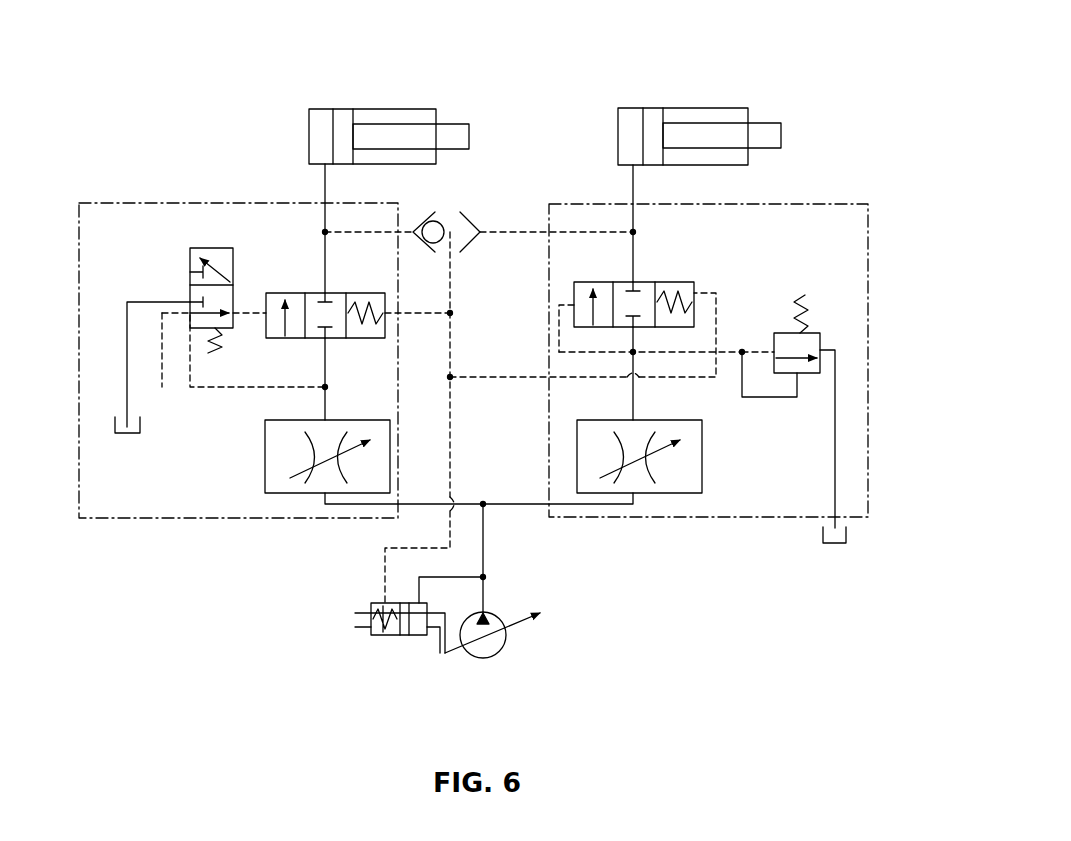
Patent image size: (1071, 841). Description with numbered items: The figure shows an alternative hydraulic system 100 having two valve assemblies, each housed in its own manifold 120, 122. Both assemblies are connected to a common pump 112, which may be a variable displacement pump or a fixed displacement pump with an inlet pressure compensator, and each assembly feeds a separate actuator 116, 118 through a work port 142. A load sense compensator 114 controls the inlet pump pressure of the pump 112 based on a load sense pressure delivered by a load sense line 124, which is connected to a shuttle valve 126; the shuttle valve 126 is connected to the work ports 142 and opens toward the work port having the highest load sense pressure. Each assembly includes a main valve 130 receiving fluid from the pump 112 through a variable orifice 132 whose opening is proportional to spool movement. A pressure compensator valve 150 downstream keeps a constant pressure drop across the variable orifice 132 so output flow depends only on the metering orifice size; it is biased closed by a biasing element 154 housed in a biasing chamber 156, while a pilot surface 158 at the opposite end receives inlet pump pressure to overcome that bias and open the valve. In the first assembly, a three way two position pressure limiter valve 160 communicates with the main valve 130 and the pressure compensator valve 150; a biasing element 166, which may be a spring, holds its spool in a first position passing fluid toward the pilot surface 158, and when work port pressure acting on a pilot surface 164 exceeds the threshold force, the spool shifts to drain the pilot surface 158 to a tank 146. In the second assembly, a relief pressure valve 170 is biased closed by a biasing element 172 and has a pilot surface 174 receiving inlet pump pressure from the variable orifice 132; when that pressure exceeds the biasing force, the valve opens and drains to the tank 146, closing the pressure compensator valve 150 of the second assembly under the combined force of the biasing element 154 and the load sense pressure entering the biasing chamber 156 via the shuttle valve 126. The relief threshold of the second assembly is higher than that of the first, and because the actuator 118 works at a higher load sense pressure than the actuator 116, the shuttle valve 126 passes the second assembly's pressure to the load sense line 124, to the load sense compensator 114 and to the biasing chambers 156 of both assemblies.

The hydraulic system 100 is at (848, 50).
The pump 112 is at (506, 643).
The load sense compensator 114 is at (385, 636).
The actuator 116 is at (372, 109).
The actuator 118 is at (706, 108).
The manifold 120 is at (79, 272).
The manifold 122 is at (868, 247).
The load sense line 124 is at (450, 463).
The shuttle valve 126 is at (450, 240).
The main valve 130 is at (265, 455).
The variable orifice 132 is at (322, 480).
The work port 142 is at (325, 232).
The tank 146 is at (115, 425).
The pressure compensator valve 150 is at (292, 293).
The biasing element 154 is at (380, 332).
The biasing chamber 156 is at (385, 322).
The pilot surface 158 is at (266, 298).
The pressure limiter valve 160 is at (190, 278).
The pilot surface 164 is at (210, 248).
The biasing element 166 is at (205, 342).
The relief pressure valve 170 is at (820, 350).
The biasing element 172 is at (805, 310).
The pilot surface 174 is at (797, 375).